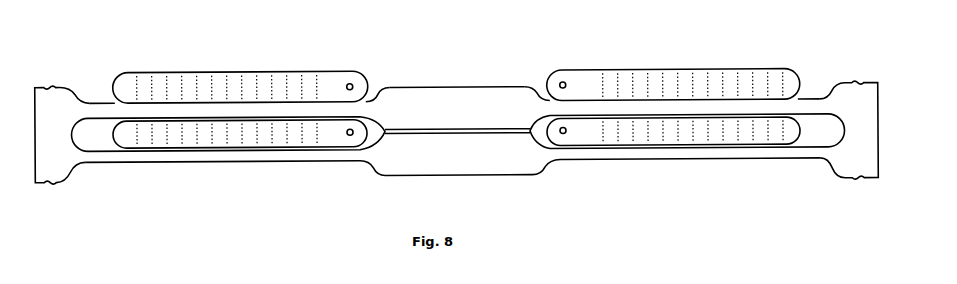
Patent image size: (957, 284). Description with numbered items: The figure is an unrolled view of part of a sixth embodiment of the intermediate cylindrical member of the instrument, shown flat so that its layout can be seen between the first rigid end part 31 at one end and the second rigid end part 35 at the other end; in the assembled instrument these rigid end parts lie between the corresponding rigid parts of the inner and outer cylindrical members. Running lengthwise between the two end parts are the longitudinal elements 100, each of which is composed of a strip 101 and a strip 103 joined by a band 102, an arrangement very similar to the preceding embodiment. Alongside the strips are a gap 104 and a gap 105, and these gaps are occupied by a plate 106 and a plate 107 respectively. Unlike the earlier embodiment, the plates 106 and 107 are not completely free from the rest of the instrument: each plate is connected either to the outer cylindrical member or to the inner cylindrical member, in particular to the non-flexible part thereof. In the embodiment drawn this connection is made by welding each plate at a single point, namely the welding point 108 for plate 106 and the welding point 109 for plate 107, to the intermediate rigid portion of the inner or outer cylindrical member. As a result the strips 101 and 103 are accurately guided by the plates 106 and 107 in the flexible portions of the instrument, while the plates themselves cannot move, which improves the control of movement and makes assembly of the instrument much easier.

The first rigid end part 31 is at (49, 106).
The second rigid end part 35 is at (860, 99).
The longitudinal elements 100 is at (463, 82).
The strip 101 is at (177, 108).
The band 102 is at (492, 102).
The strip 103 is at (643, 108).
The gap 104 is at (102, 139).
The gap 105 is at (811, 136).
The plate 106 is at (266, 135).
The plate 107 is at (697, 133).
The welding point 108 is at (352, 135).
The welding point 109 is at (565, 134).